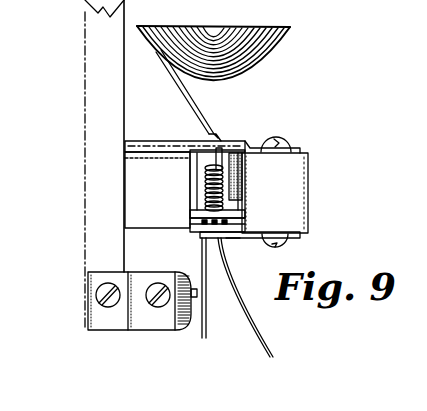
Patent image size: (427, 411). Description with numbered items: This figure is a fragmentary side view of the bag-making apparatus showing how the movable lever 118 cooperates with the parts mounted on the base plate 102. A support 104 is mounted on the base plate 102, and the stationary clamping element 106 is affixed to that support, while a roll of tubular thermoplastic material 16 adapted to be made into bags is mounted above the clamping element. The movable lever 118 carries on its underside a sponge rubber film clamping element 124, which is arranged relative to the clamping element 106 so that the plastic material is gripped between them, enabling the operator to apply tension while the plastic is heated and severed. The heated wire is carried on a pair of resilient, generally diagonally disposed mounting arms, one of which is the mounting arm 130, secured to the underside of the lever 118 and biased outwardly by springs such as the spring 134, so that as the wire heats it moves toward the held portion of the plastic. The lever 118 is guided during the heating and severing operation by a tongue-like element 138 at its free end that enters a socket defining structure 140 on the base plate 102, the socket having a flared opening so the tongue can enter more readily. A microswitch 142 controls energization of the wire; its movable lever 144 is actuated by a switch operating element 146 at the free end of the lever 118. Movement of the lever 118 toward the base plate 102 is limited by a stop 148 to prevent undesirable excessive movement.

The base plate 102 is at (90, 40).
The roll of tubular thermoplastic material 16 is at (280, 38).
The socket defining structure 140 is at (155, 141).
The tongue-like element 138 is at (221, 134).
The mounting arm 130 is at (232, 150).
The sponge rubber film clamping element 124 is at (243, 182).
The movable lever 118 is at (309, 170).
The support 104 is at (128, 160).
The clamping element 106 is at (197, 180).
The spring 134 is at (210, 186).
The stop 148 is at (196, 229).
The switch operating element 146 is at (235, 240).
The movable lever 144 is at (205, 330).
The microswitch 142 is at (150, 328).